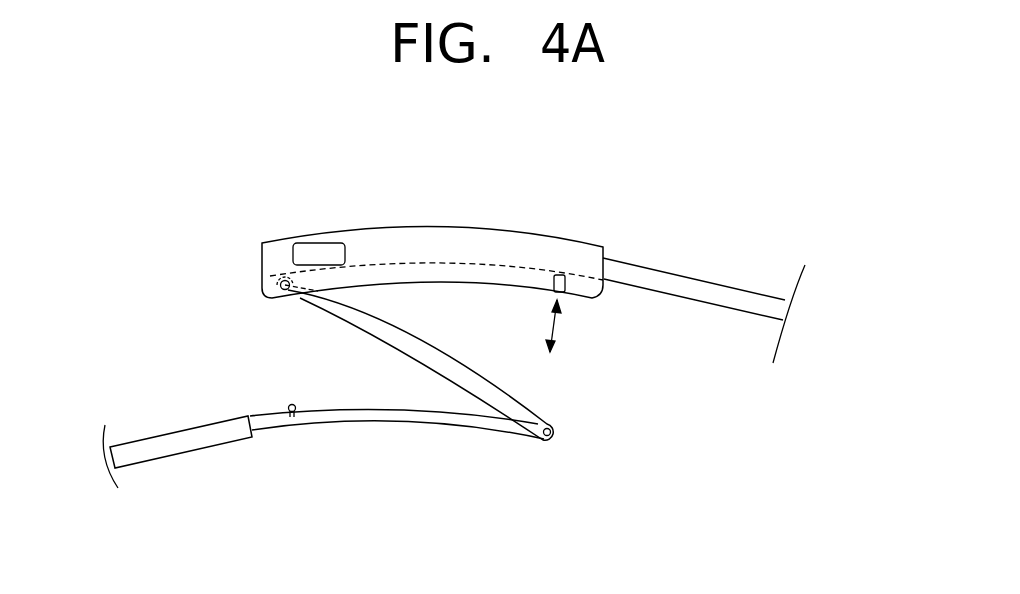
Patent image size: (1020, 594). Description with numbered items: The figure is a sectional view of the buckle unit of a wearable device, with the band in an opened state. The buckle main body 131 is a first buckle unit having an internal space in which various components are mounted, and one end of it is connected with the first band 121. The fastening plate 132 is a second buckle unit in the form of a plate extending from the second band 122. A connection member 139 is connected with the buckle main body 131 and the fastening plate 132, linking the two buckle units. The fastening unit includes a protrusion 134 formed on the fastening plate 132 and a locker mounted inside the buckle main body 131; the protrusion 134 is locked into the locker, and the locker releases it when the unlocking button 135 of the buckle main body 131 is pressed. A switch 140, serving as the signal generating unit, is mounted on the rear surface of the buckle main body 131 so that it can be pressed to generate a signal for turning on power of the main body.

The first band 121 is at (688, 274).
The second band 122 is at (180, 443).
The buckle main body 131 is at (461, 227).
The fastening plate 132 is at (412, 423).
The protrusion 134 is at (289, 404).
The unlocking button 135 is at (317, 253).
The connection member 139 is at (400, 333).
The switch 140 is at (573, 295).